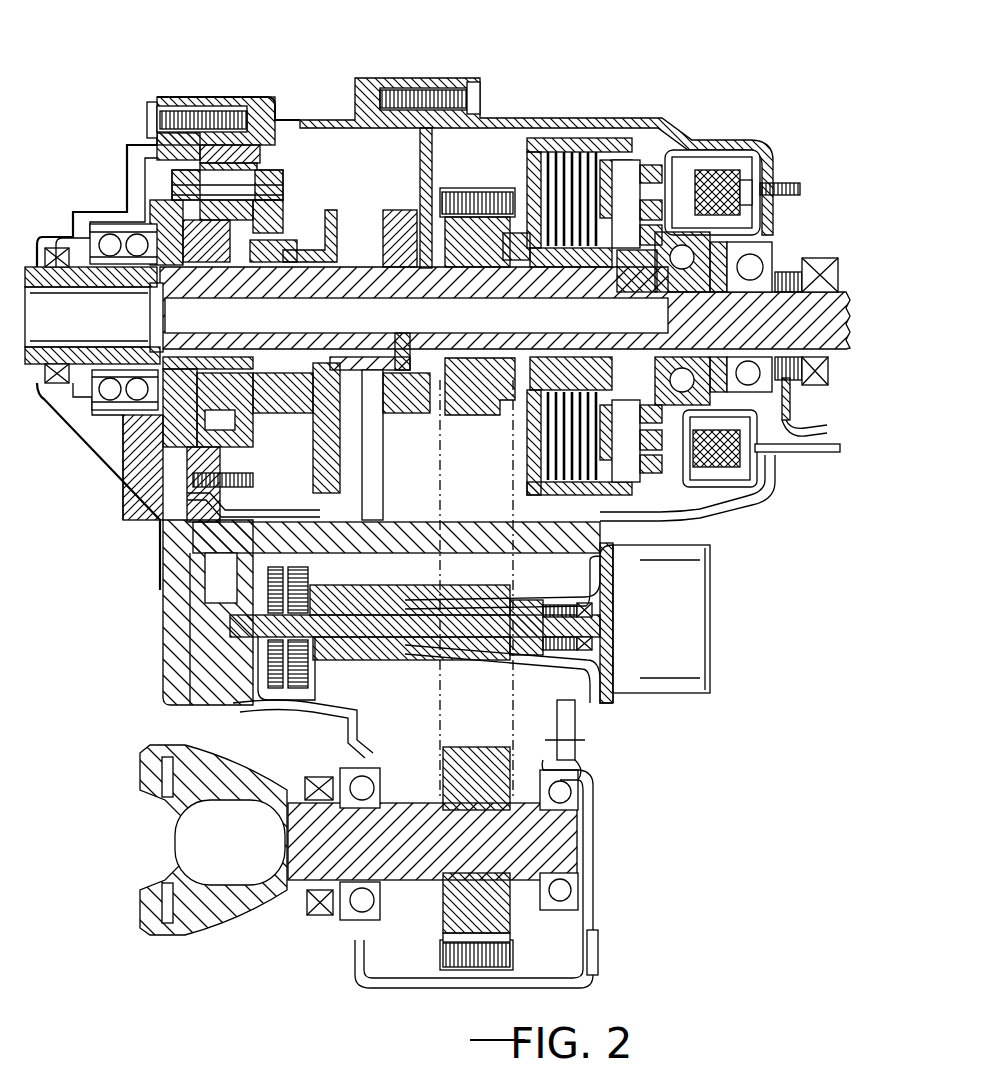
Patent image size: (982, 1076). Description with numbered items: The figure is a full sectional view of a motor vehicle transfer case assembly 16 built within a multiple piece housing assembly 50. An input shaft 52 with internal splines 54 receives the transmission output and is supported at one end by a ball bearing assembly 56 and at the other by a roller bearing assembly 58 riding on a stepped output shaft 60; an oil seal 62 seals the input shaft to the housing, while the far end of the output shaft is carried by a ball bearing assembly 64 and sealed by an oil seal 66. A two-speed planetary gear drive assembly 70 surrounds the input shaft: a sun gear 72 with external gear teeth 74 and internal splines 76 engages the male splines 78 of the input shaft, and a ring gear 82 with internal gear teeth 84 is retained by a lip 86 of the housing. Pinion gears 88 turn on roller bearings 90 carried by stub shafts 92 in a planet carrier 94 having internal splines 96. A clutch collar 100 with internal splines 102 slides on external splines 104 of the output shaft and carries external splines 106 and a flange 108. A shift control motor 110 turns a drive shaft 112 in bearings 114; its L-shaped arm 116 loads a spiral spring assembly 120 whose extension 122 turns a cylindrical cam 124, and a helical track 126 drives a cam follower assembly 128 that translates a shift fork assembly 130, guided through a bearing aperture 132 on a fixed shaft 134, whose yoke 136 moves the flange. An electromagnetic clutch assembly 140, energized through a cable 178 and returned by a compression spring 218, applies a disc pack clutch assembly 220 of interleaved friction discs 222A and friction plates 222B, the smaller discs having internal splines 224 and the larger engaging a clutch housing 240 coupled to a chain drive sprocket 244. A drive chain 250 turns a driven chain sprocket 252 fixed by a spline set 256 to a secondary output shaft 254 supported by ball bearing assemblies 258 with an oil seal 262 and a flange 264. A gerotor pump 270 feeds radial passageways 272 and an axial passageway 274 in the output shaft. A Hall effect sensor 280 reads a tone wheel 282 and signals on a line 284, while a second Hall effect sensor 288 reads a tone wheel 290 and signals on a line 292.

The transfer case assembly 16 is at (160, 78).
The housing assembly 50 is at (148, 93).
The input shaft 52 is at (43, 248).
The internal splines 54 is at (85, 300).
The ball bearing assembly 56 is at (172, 225).
The roller bearing assembly 58 is at (147, 283).
The output shaft 60 is at (857, 313).
The oil seal 62 is at (42, 400).
The ball bearing assembly 64 is at (768, 242).
The oil seal 66 is at (822, 265).
The planetary gear drive assembly 70 is at (283, 92).
The sun gear 72 is at (197, 470).
The external gear teeth 74 is at (233, 413).
The internal splines 76 is at (125, 425).
The male splines 78 is at (280, 315).
The ring gear 82 is at (167, 549).
The internal gear teeth 84 is at (167, 519).
The lip 86 is at (196, 150).
The pinion gears 88 is at (218, 160).
The roller bearings 90 is at (258, 145).
The stub shafts 92 is at (287, 200).
The planet carrier 94 is at (292, 243).
The internal splines 96 is at (300, 243).
The clutch collar 100 is at (330, 218).
The internal splines 102 is at (345, 315).
The external splines 104 is at (415, 315).
The external splines 106 is at (108, 232).
The flange 108 is at (353, 412).
The shift control motor 110 is at (693, 602).
The drive shaft 112 is at (497, 632).
The bearings 114 is at (247, 642).
The L-shaped arm 116 is at (267, 710).
The spiral spring assembly 120 is at (256, 580).
The extension 122 is at (313, 672).
The cylindrical cam 124 is at (393, 667).
The helical track 126 is at (407, 585).
The cam follower assembly 128 is at (145, 585).
The shift fork assembly 130 is at (360, 474).
The bearing aperture 132 is at (277, 530).
The fixed shaft 134 is at (423, 522).
The yoke 136 is at (350, 459).
The clutch assembly 140 is at (692, 70).
The cable 178 is at (817, 463).
The compression spring 218 is at (634, 315).
The disc pack clutch assembly 220 is at (540, 70).
The friction discs 222A is at (490, 315).
The friction plates 222B is at (500, 290).
The internal splines 224 is at (565, 315).
The clutch housing 240 is at (533, 150).
The chain drive sprocket 244 is at (421, 120).
The drive chain 250 is at (440, 210).
The driven chain sprocket 252 is at (457, 915).
The secondary output shaft 254 is at (412, 855).
The spline set 256 is at (465, 820).
The ball bearing assemblies 258 is at (355, 922).
The oil seal 262 is at (303, 902).
The flange 264 is at (200, 857).
The gerotor pump 270 is at (430, 415).
The radial passageways 272 is at (386, 353).
The axial passageway 274 is at (255, 331).
The Hall effect sensor 280 is at (800, 450).
The tone wheel 282 is at (790, 421).
The line 284 is at (817, 447).
The second Hall effect sensor 288 is at (557, 772).
The tone wheel 290 is at (585, 844).
The line 292 is at (577, 732).